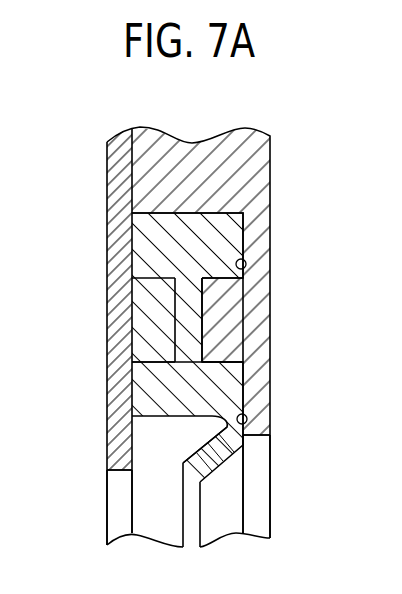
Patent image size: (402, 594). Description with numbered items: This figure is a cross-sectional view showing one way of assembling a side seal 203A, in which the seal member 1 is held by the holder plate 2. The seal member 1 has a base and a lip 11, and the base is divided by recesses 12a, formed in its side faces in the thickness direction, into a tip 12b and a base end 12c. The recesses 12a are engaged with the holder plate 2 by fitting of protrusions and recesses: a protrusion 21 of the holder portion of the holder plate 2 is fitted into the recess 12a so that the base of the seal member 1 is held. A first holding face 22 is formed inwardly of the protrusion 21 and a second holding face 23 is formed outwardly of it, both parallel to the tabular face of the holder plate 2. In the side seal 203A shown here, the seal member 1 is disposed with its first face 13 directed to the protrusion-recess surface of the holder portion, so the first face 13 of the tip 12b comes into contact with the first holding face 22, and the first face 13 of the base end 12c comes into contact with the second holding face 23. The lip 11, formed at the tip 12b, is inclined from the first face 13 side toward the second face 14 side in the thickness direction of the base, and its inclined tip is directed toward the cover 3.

The side seal 203A is at (281, 162).
The cover 3 is at (117, 345).
The holder plate 2 is at (273, 305).
The base end 12c is at (232, 237).
The second holding face 23 is at (245, 265).
The protrusion 21 is at (210, 322).
The recess 12a is at (236, 362).
The tip 12b is at (236, 398).
The first holding face 22 is at (247, 424).
The lip 11 is at (213, 470).
The second face 14 is at (243, 515).
The first face 13 is at (131, 517).
The seal member 1 is at (170, 422).